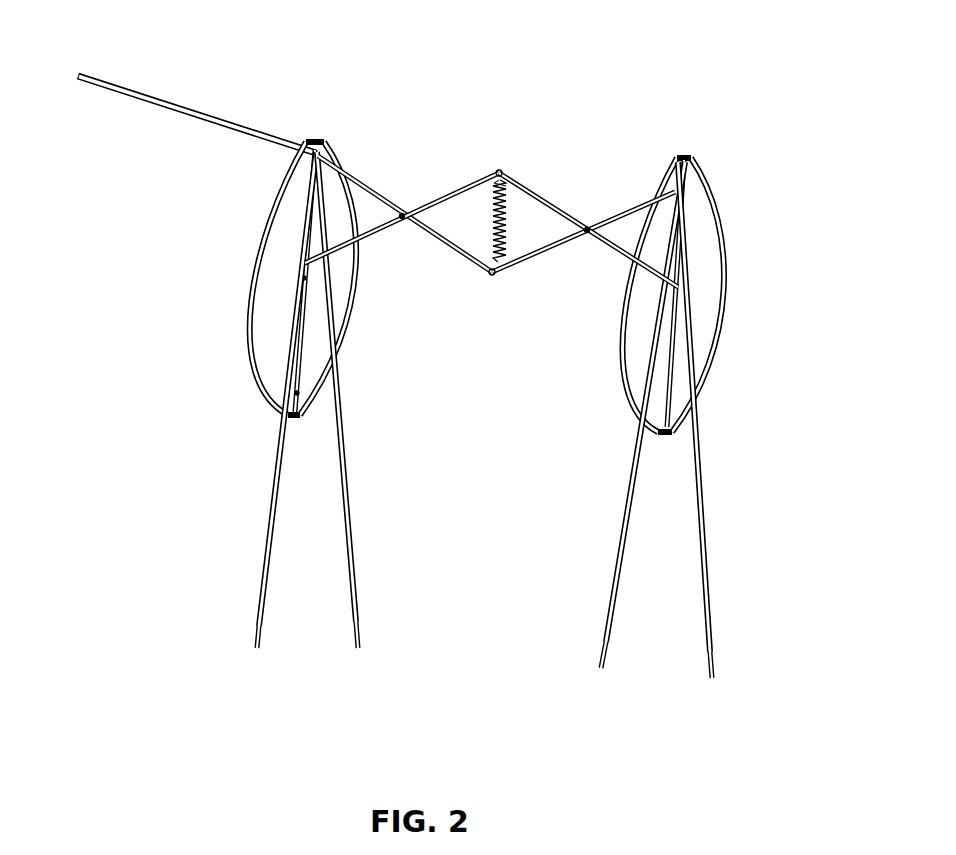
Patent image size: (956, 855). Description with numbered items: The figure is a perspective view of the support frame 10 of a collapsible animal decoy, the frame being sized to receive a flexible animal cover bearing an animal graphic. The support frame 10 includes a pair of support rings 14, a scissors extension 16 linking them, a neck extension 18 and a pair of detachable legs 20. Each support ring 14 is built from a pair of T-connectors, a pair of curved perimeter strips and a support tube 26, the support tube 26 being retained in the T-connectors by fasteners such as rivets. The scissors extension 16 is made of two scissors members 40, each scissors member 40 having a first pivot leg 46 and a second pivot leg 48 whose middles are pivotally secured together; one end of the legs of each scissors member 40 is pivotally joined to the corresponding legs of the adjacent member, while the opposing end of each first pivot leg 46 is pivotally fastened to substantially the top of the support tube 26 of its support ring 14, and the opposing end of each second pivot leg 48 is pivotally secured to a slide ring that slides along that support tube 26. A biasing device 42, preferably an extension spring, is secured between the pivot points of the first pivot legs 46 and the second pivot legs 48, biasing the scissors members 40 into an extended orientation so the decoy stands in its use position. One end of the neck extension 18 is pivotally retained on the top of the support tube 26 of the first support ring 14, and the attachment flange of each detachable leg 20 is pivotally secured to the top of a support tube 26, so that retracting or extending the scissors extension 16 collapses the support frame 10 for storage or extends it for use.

The support frame 10 is at (536, 78).
The support ring 14 is at (243, 343).
The scissors extension 16 is at (491, 222).
The neck extension 18 is at (152, 97).
The detachable leg 20 is at (355, 437).
The support tube 26 is at (300, 306).
The scissors member 40 is at (491, 209).
The biasing device 42 is at (488, 274).
The first pivot leg 46 is at (355, 182).
The second pivot leg 48 is at (533, 187).